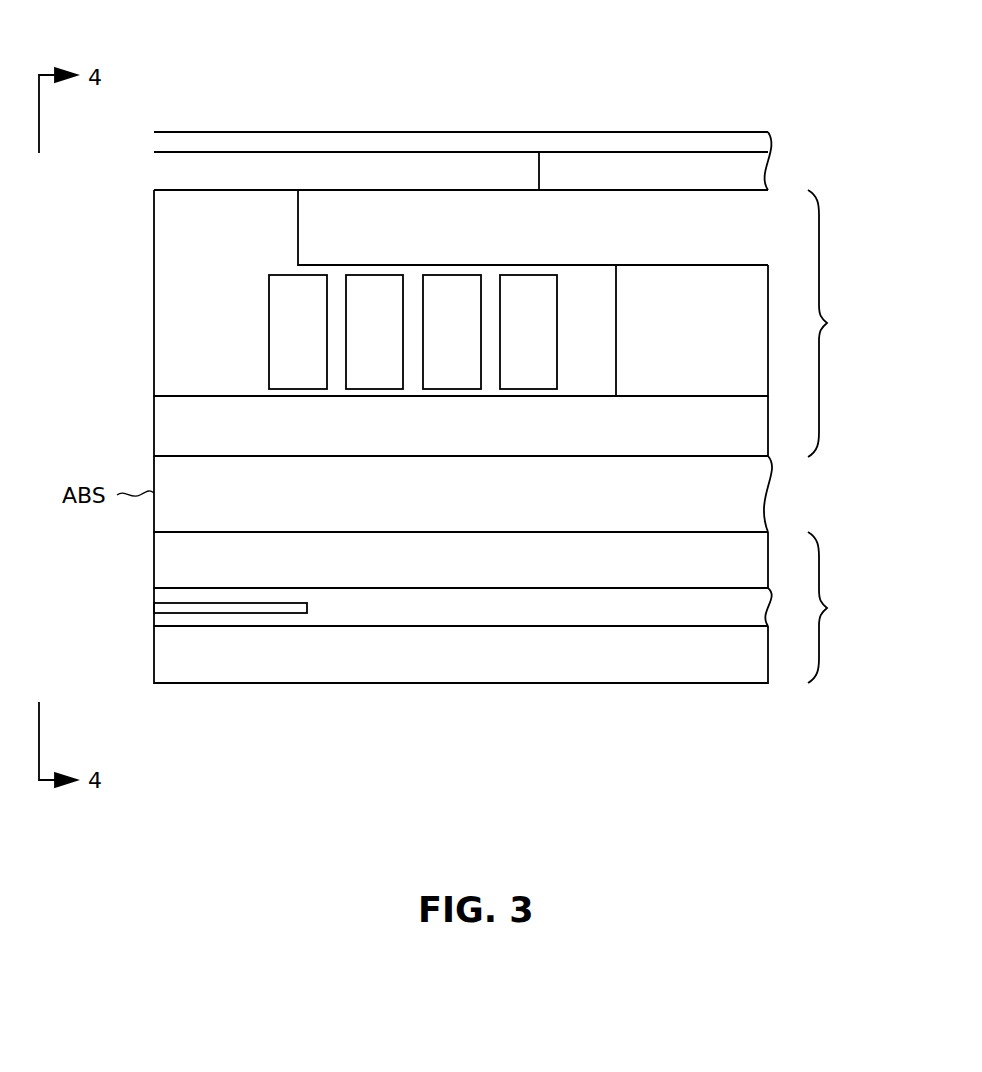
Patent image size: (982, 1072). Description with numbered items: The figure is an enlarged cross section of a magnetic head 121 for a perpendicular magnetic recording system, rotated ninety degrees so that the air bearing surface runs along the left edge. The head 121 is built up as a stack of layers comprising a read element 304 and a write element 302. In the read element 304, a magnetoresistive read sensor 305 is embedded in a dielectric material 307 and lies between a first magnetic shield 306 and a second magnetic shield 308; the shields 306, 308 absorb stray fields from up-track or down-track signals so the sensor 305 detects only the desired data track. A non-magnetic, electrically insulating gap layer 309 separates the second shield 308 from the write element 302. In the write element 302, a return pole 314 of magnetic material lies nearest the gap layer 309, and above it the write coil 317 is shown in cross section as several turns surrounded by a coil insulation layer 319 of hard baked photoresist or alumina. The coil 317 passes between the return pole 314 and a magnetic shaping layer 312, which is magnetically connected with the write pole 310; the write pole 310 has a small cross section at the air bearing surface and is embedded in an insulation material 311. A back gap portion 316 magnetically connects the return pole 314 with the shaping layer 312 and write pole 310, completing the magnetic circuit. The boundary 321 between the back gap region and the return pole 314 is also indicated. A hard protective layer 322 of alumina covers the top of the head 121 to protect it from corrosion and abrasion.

The magnetic head 121 is at (503, 58).
The write element 302 is at (819, 225).
The read element 304 is at (819, 542).
The magnetoresistive read sensor 305 is at (308, 607).
The first magnetic shield 306 is at (393, 644).
The dielectric material 307 is at (645, 608).
The second magnetic shield 308 is at (395, 559).
The non-magnetic, electrically insulating gap layer 309 is at (412, 490).
The write pole 310 is at (247, 172).
The insulation material 311 is at (655, 172).
The magnetic shaping layer 312 is at (402, 230).
The return pole 314 is at (400, 429).
The back gap portion 316 is at (140, 247).
The write coil 317 is at (319, 326).
The coil insulation layer 319 is at (240, 300).
The interface 321 is at (257, 394).
The protective layer 322 is at (353, 143).